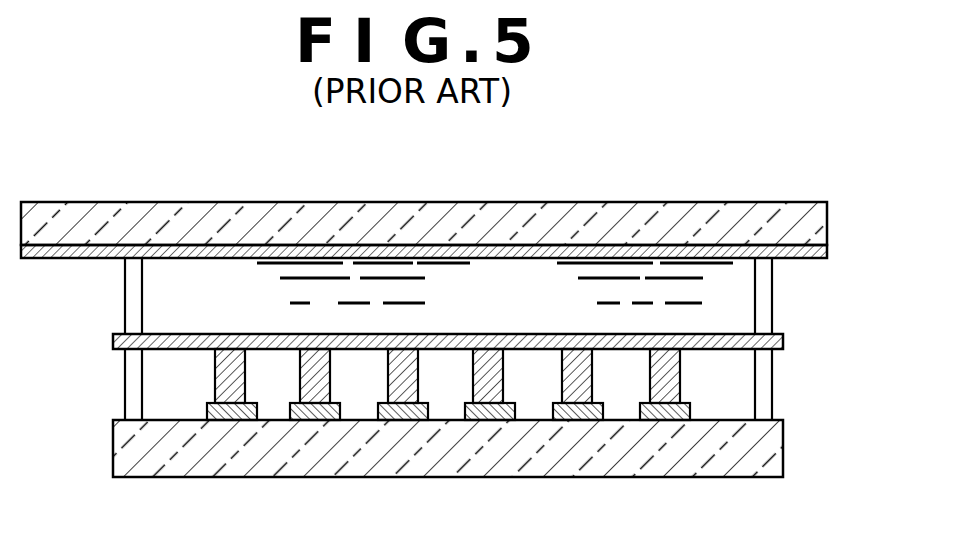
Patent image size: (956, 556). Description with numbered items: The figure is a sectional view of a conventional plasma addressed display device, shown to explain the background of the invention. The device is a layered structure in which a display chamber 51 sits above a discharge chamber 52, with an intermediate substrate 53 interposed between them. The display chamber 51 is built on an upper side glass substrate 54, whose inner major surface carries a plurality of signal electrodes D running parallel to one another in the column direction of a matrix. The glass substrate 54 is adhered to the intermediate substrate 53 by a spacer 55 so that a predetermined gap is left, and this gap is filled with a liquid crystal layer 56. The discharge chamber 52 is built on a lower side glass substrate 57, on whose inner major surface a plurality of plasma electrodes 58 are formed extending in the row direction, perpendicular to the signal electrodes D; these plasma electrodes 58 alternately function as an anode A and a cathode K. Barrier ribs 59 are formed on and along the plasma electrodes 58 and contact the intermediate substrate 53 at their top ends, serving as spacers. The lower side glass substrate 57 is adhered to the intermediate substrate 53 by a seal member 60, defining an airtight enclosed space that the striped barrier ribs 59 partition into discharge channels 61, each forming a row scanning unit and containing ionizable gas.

The display chamber 51 is at (845, 202).
The discharge chamber 52 is at (840, 345).
The intermediate substrate 53 is at (784, 338).
The upper side glass substrate 54 is at (568, 218).
The spacer 55 is at (773, 297).
The liquid crystal layer 56 is at (228, 272).
The lower side glass substrate 57 is at (405, 462).
The plasma electrodes 58 is at (663, 421).
The barrier ribs 59 is at (560, 370).
The seal member 60 is at (124, 384).
The discharge channels 61 is at (270, 400).
The anode A is at (230, 421).
The cathode K is at (315, 421).
The signal electrodes D is at (77, 258).